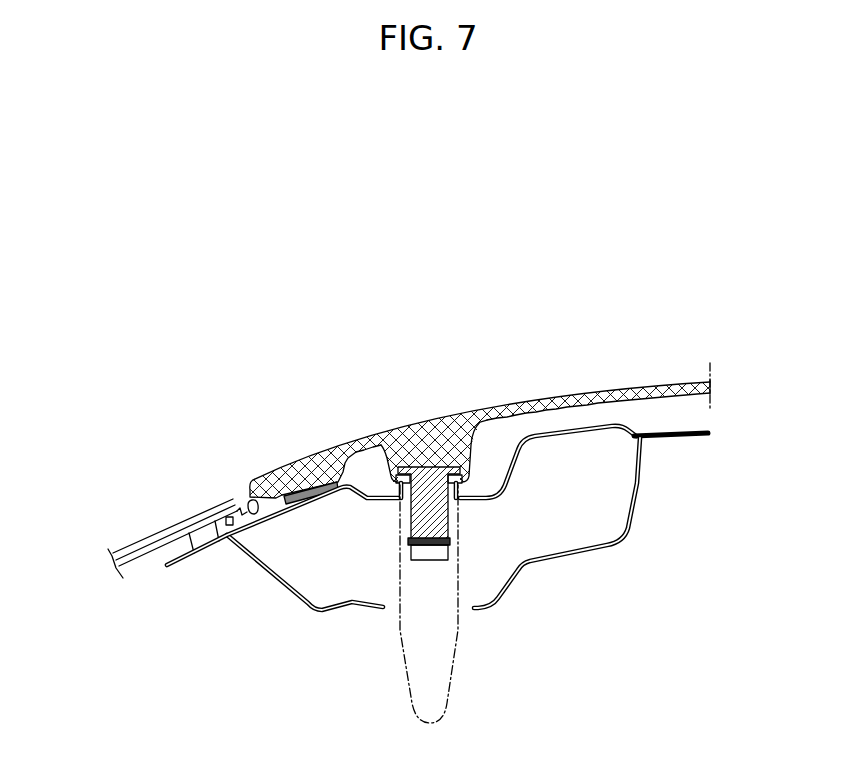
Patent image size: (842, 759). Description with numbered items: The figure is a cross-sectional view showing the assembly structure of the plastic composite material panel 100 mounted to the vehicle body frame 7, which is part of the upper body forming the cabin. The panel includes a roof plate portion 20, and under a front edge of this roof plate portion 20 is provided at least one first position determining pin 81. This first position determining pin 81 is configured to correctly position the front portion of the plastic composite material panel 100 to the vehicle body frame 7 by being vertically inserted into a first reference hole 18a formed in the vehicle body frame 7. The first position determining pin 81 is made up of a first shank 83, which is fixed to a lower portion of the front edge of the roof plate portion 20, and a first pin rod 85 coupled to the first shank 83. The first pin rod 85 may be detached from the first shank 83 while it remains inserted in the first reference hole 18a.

The plastic composite material panel 100 is at (421, 227).
The roof plate portion 20 is at (494, 402).
The first shank 83 is at (428, 473).
The first reference hole 18a is at (460, 500).
The vehicle body frame 7 is at (641, 502).
The first position determining pin 81 is at (424, 604).
The first pin rod 85 is at (458, 648).